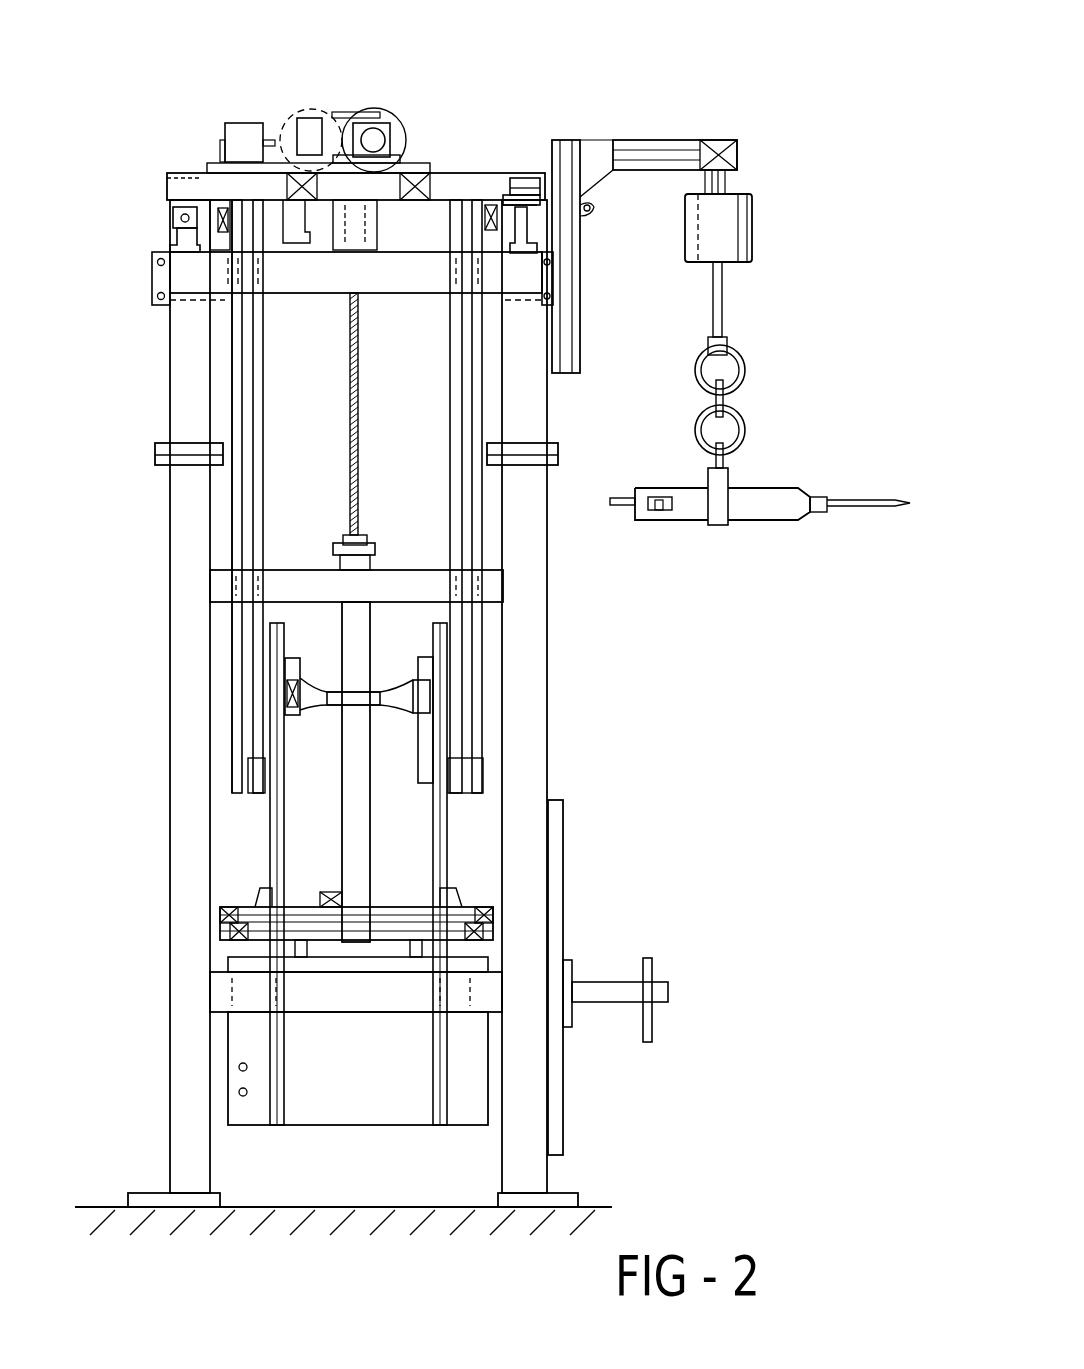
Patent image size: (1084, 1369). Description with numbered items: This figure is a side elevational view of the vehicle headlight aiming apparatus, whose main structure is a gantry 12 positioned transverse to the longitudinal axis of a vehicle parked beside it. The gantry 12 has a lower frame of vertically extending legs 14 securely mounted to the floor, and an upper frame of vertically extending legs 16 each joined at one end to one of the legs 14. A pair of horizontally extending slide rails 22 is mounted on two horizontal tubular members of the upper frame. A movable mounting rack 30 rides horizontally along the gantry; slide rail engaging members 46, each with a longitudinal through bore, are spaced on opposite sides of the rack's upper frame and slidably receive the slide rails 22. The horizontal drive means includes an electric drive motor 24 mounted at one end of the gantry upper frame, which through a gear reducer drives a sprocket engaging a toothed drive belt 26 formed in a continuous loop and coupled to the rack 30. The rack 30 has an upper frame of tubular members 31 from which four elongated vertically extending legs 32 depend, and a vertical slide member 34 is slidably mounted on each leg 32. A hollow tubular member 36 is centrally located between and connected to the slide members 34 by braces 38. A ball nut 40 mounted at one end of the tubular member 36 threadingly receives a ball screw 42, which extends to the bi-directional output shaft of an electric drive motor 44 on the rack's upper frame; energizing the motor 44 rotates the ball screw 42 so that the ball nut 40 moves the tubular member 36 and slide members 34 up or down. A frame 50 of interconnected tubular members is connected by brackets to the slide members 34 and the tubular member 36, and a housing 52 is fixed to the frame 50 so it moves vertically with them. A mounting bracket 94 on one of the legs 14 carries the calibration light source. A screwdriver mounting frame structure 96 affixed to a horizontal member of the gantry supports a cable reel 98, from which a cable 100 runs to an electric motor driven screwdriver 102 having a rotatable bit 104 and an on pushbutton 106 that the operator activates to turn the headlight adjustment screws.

The gantry 12 is at (128, 427).
The vertically extending legs 14 is at (185, 600).
The vertically extending legs 16 is at (180, 385).
The slide rails 22 is at (172, 233).
The electric drive motor 24 is at (300, 120).
The toothed drive belt 26 is at (240, 124).
The movable mounting rack 30 is at (232, 498).
The tubular members 31 is at (523, 186).
The vertically extending legs 32 is at (245, 348).
The vertical slide member 34 is at (275, 880).
The hollow tubular member 36 is at (370, 620).
The braces 38 is at (305, 712).
The ball nut 40 is at (370, 548).
The ball screw 42 is at (358, 418).
The electric drive motor 44 is at (385, 108).
The slide rail engaging members 46 is at (180, 210).
The frame 50 is at (495, 918).
The housing 52 is at (245, 1043).
The mounting bracket 94 is at (608, 998).
The screwdriver mounting frame structure 96 is at (675, 138).
The cable reel 98 is at (753, 238).
The cable 100 is at (725, 307).
The electric motor driven screwdriver 102 is at (758, 510).
The rotatable bit 104 is at (880, 508).
The on pushbutton 106 is at (660, 510).